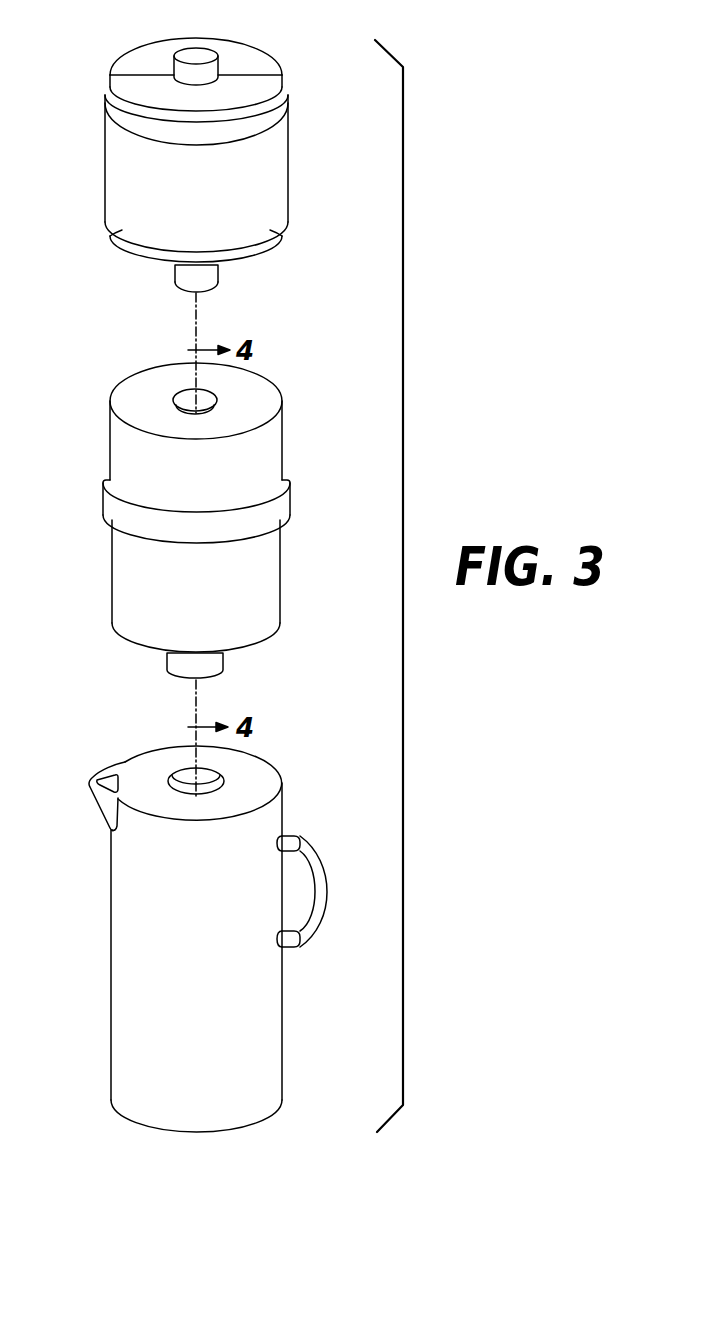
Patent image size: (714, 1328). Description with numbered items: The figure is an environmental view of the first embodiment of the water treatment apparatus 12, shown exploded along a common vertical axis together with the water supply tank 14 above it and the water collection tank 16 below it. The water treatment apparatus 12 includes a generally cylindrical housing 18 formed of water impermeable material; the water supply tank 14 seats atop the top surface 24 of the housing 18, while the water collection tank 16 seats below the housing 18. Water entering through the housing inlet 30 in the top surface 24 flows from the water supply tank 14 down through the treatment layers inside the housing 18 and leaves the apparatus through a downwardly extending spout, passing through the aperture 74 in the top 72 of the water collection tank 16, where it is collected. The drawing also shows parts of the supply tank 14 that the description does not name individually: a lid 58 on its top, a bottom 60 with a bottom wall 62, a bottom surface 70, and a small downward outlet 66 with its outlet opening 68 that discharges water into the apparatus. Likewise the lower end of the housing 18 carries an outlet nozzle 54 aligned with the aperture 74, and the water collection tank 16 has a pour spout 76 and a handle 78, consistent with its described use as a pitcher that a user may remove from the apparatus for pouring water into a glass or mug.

The water treatment apparatus 12 is at (310, 472).
The water supply tank 14 is at (304, 80).
The water collection tank 16 is at (311, 957).
The housing 18 is at (82, 484).
The top surface 24 is at (149, 387).
The housing inlet 30 is at (218, 403).
The outlet nozzle of filter cartridge 54 is at (218, 658).
The lid 58 is at (135, 70).
The bottom of reservoir 60 is at (148, 259).
The bottom wall 62 is at (127, 245).
The outlet spout 66 is at (219, 278).
The outlet opening 68 is at (182, 291).
The bottom surface 70 is at (232, 266).
The top 72 is at (253, 767).
The aperture 74 is at (175, 770).
The pour spout 76 is at (88, 782).
The handle 78 is at (300, 836).